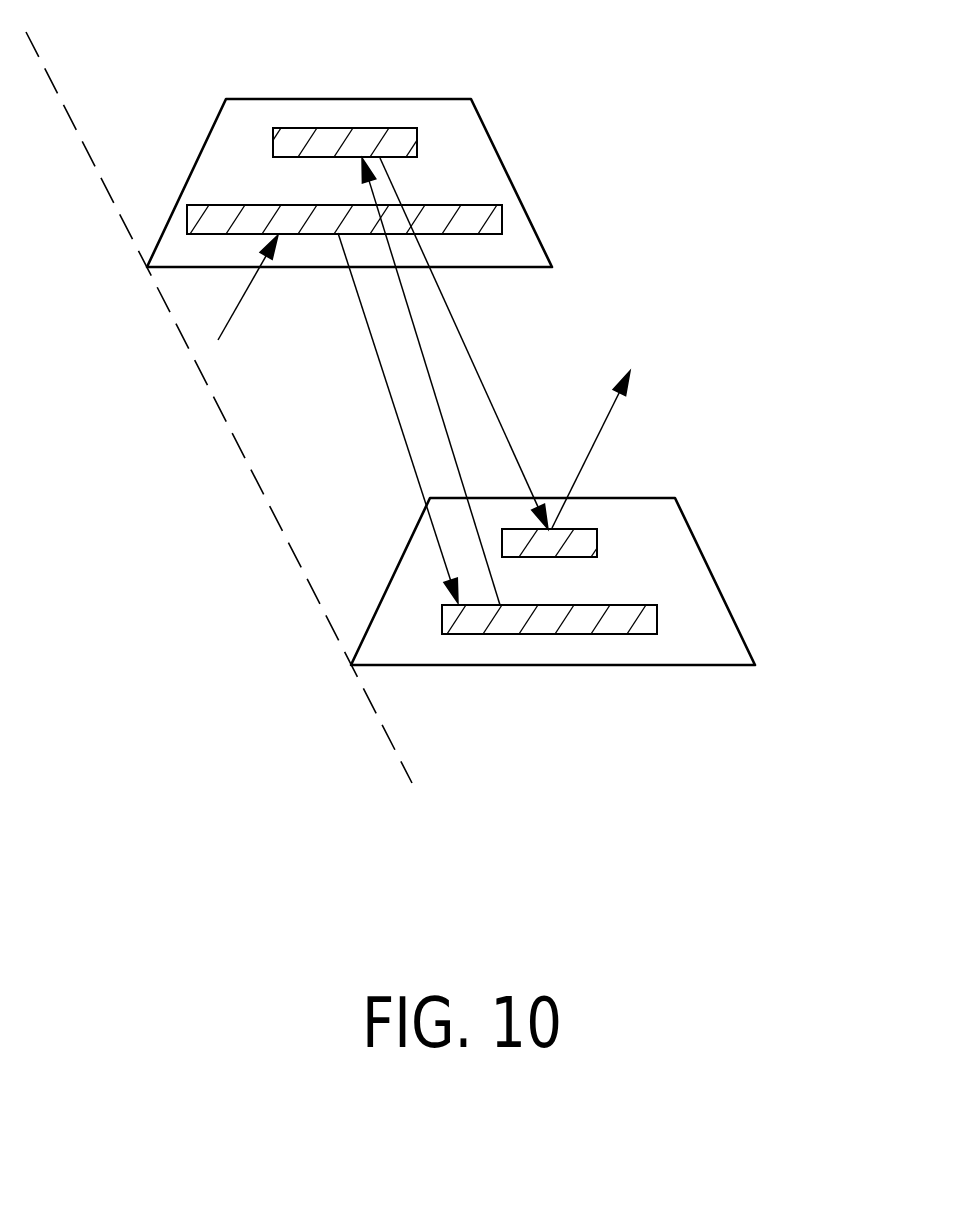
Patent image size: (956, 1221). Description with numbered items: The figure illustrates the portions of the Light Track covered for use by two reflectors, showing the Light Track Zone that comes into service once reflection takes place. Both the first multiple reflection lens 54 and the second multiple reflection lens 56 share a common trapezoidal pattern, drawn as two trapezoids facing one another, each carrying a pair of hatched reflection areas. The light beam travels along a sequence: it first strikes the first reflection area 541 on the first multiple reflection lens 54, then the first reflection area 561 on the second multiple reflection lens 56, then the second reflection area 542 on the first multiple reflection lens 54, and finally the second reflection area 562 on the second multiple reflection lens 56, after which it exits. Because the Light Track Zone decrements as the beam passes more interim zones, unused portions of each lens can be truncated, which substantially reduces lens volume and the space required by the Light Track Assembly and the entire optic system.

The first multiple reflection lens 54 is at (262, 98).
The first reflection area 541 is at (502, 219).
The second reflection area 542 is at (417, 137).
The second multiple reflection lens 56 is at (555, 667).
The first reflection area 561 is at (657, 620).
The second reflection area 562 is at (598, 543).